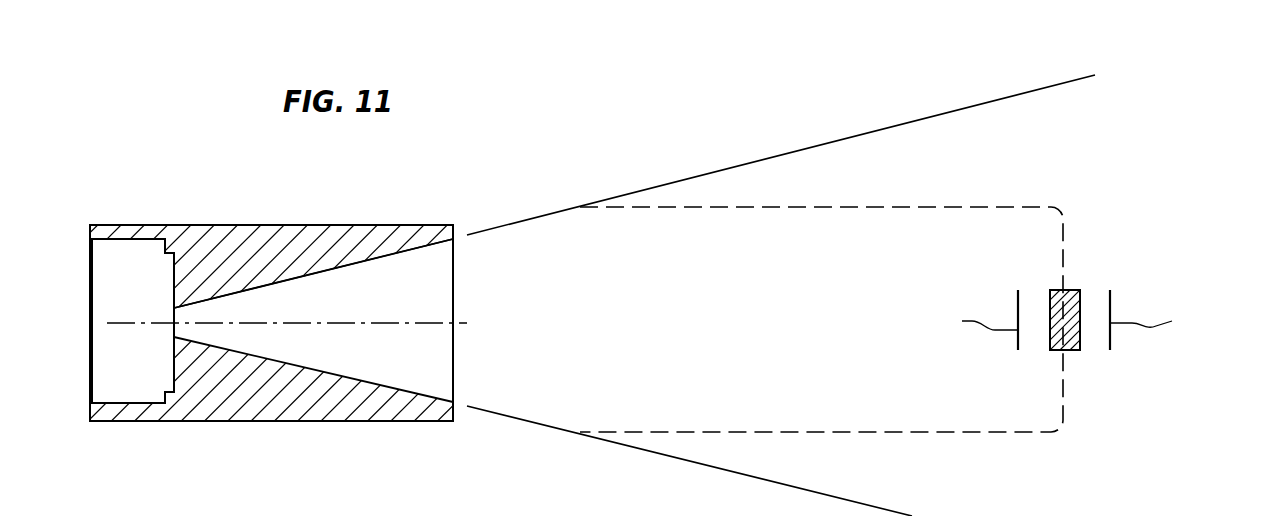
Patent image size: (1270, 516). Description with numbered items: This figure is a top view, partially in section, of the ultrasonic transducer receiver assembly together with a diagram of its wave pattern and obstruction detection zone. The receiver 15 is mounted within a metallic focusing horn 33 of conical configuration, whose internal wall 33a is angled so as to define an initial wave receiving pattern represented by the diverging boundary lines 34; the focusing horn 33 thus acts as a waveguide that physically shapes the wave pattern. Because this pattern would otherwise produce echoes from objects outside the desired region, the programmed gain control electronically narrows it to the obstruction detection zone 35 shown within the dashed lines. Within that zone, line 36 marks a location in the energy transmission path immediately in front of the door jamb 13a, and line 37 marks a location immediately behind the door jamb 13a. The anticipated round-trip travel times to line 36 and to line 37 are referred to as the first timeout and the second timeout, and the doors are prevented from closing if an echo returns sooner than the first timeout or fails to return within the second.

The receiver 15 is at (118, 253).
The focusing horn 33 is at (264, 233).
The internal wall 33a is at (347, 265).
The boundary lines 34 is at (780, 515).
The obstruction detection zone 35 is at (972, 212).
The line 36 is at (1018, 298).
The line 37 is at (1110, 302).
The door jamb 13a is at (1068, 293).